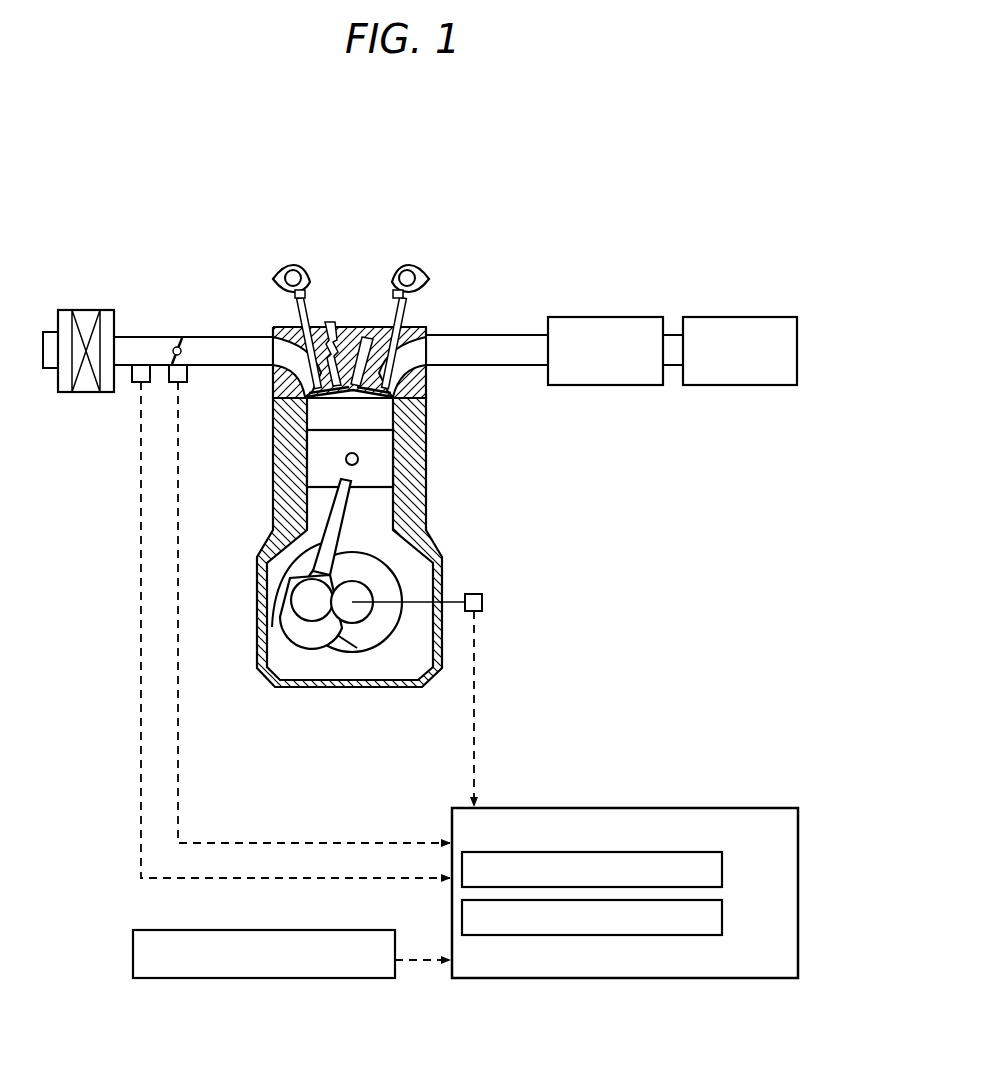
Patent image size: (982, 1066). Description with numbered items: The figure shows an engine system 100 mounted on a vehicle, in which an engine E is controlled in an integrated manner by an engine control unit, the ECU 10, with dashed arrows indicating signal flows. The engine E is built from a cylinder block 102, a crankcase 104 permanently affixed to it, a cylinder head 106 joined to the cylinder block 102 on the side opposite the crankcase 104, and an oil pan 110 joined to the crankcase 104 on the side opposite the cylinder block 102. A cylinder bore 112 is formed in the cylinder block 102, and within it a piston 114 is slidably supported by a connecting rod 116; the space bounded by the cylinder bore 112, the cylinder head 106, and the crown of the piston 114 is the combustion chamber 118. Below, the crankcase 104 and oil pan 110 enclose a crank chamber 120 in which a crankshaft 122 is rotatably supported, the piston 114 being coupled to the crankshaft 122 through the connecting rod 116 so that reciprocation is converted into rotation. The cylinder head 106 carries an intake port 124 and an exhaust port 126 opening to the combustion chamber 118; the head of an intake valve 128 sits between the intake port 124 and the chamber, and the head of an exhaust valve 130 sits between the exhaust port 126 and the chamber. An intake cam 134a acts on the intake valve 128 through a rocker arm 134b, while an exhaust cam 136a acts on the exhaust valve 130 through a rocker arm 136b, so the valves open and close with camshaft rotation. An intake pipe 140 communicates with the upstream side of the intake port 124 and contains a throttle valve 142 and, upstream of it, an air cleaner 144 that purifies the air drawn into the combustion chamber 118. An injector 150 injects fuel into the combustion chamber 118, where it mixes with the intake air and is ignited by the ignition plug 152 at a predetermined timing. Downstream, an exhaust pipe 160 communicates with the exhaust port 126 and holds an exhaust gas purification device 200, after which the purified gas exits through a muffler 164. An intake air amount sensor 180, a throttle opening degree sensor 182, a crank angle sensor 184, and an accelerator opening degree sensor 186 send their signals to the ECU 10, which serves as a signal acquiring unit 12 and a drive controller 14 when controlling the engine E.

The engine system 100 is at (135, 126).
The engine E is at (357, 195).
The engine control unit (ECU) 10 is at (752, 808).
The signal acquiring unit 12 is at (722, 868).
The drive controller 14 is at (722, 918).
The cylinder block 102 is at (428, 470).
The crankcase 104 is at (430, 523).
The cylinder head 106 is at (275, 345).
The oil pan 110 is at (258, 648).
The cylinder bore 112 is at (395, 412).
The piston 114 is at (322, 462).
The connecting rod 116 is at (266, 598).
The combustion chamber 118 is at (372, 422).
The crank chamber 120 is at (302, 658).
The crankshaft 122 is at (358, 628).
The intake port 124 is at (272, 350).
The exhaust port 126 is at (427, 347).
The intake valve 128 is at (275, 330).
The exhaust valve 130 is at (410, 322).
The intake cam 134a is at (285, 265).
The rocker arm 134b is at (309, 293).
The exhaust cam 136a is at (410, 263).
The rocker arm 136b is at (387, 290).
The intake pipe 140 is at (128, 336).
The throttle valve 142 is at (174, 336).
The air cleaner 144 is at (67, 392).
The injector 150 is at (330, 321).
The ignition plug 152 is at (368, 336).
The exhaust pipe 160 is at (517, 334).
The muffler 164 is at (783, 316).
The exhaust gas purification device 200 is at (645, 316).
The intake air amount sensor 180 is at (131, 373).
The throttle opening degree sensor 182 is at (187, 373).
The crank angle sensor 184 is at (482, 603).
The accelerator opening degree sensor 186 is at (352, 930).